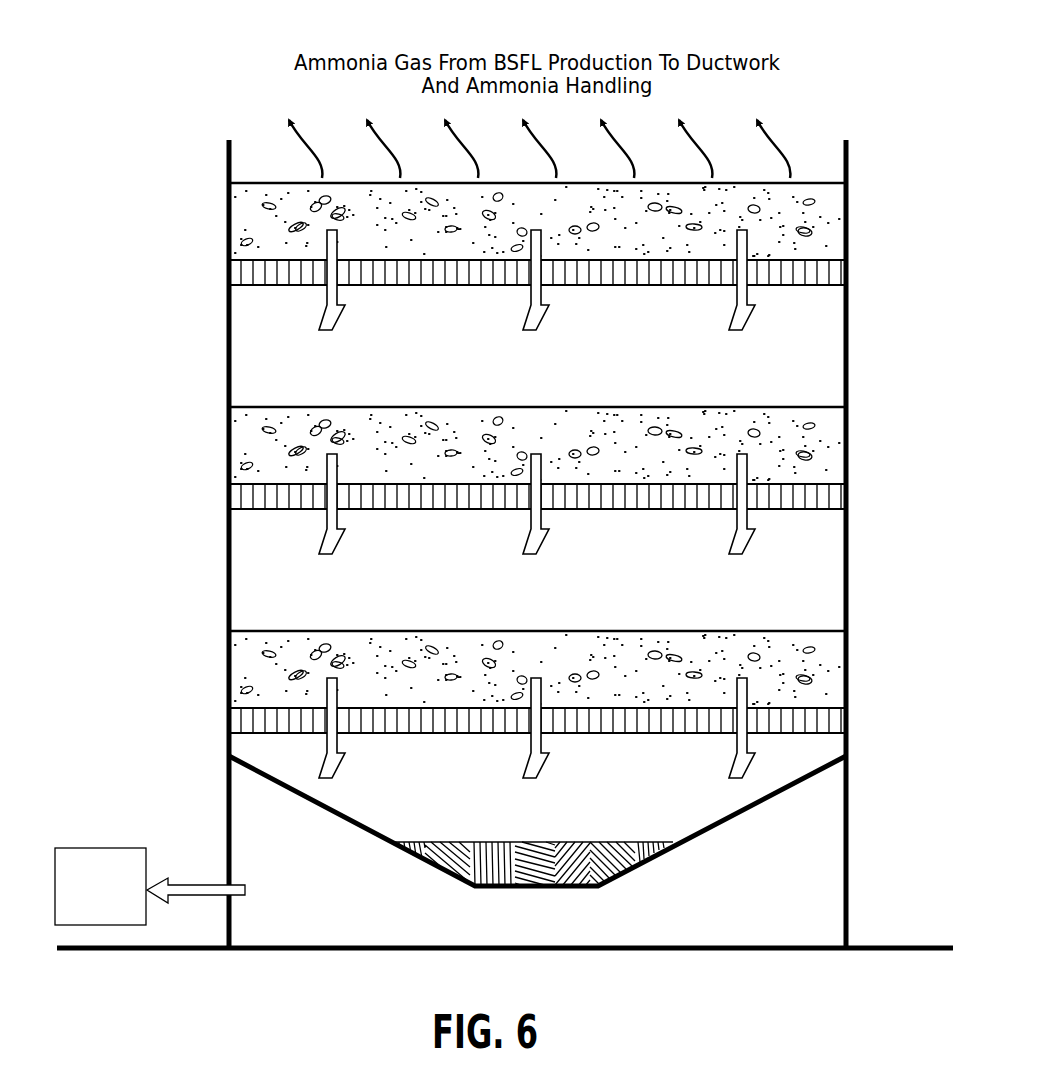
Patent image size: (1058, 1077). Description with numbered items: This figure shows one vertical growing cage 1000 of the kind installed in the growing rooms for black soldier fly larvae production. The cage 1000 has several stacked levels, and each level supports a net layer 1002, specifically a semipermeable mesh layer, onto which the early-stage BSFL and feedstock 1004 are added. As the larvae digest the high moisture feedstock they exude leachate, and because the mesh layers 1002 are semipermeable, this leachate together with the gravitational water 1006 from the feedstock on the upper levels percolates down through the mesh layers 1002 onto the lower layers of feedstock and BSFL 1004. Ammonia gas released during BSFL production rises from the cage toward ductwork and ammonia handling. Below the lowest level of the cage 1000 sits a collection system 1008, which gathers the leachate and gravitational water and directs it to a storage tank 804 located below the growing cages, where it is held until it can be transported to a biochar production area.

The vertical growing cage 1000 is at (114, 70).
The net layer 1002 is at (832, 271).
The BSFL and feedstock 1004 is at (818, 213).
The gravitational water 1006 is at (325, 296).
The collection system 1008 is at (622, 860).
The storage tank 804 is at (110, 901).